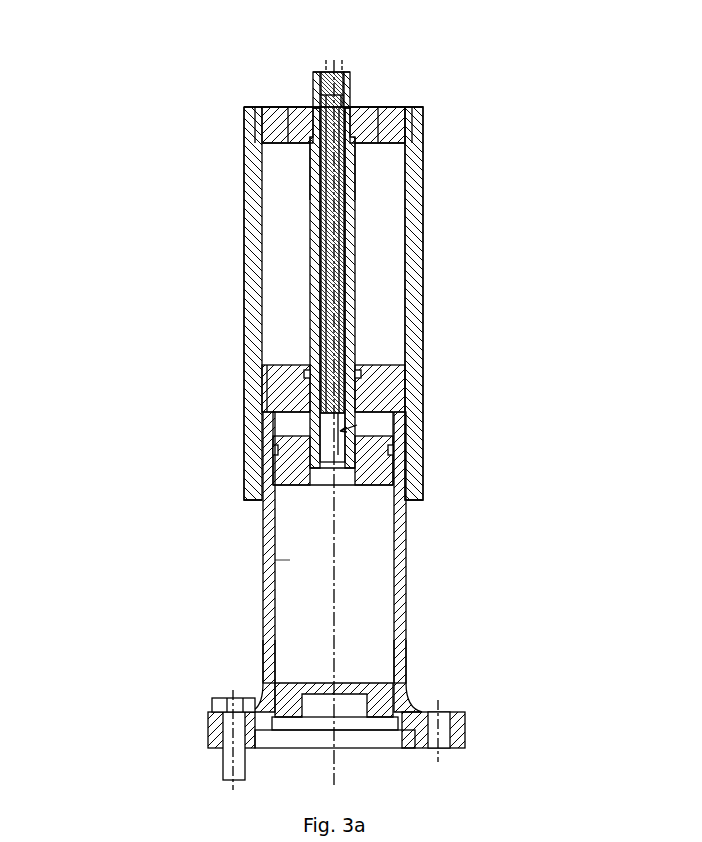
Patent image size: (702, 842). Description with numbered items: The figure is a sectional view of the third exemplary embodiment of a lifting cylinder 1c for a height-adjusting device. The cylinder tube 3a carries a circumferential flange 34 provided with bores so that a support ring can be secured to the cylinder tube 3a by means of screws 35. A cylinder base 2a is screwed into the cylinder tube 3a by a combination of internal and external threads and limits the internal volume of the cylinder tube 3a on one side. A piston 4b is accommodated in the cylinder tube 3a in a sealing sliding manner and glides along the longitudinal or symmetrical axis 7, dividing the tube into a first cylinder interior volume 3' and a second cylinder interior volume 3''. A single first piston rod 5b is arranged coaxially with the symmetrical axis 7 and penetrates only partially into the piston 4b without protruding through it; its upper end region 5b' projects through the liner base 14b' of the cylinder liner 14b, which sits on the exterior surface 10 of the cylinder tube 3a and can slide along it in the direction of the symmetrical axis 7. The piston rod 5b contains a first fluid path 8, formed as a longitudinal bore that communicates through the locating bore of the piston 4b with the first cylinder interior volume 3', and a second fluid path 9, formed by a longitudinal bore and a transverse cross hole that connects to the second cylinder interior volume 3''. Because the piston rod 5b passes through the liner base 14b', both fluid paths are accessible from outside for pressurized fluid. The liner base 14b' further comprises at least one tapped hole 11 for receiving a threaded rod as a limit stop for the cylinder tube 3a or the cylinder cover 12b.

The lifting cylinder 1c is at (77, 93).
The tapped hole 11 is at (283, 125).
The liner base 14b' is at (389, 93).
The cylinder liner 14b is at (393, 303).
The upper end of guide tube 5b' is at (237, 178).
The first fluid path 8 is at (307, 256).
The piston rod 5b is at (242, 288).
The second fluid path 9 is at (343, 292).
The cylinder cover 12b is at (266, 390).
The second cylinder interior volume 3'' is at (252, 448).
The piston 4b is at (263, 482).
The exterior surface 10 is at (266, 543).
The first cylinder interior volume 3' is at (232, 586).
The cylinder tube 3a is at (270, 602).
The cylinder base 2a is at (270, 695).
The symmetrical axis 7 is at (337, 582).
The screws 35 is at (208, 735).
The flange 34 is at (467, 718).